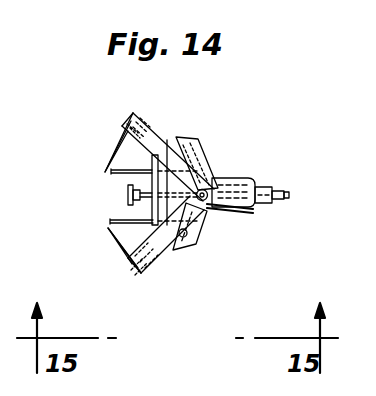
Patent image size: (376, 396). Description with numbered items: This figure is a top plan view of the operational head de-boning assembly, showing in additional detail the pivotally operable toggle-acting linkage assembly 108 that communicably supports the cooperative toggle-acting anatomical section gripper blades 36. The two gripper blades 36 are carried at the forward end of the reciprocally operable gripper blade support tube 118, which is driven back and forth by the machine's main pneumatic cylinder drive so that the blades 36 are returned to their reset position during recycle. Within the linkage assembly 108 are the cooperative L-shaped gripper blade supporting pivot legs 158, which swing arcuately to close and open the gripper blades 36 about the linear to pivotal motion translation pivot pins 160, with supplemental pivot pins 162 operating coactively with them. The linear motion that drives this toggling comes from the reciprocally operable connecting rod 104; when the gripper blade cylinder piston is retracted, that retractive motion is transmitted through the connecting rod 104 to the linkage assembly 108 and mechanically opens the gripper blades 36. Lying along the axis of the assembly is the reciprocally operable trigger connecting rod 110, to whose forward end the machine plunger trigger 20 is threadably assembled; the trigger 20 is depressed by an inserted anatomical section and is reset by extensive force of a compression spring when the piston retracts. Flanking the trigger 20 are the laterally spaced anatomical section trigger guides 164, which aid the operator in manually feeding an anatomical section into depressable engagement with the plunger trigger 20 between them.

The pivotally operable toggle-acting linkage assembly 108 is at (212, 104).
The cooperative toggle-acting anatomical section gripper blades 36 is at (117, 143).
The "L"-shaped gripper blade supporting pivot legs 158 is at (152, 135).
The laterally spaced anatomical section trigger guides 164 is at (113, 176).
The machine plunger trigger 20 is at (127, 194).
The linear to pivotal motion translation pivot pins 160 is at (207, 207).
The supplemental pivot pins 162 is at (200, 147).
The reciprocally operable gripper blade support tube 118 is at (235, 178).
The reciprocally operable connecting rod 104 is at (268, 186).
The reciprocally operable trigger connecting rod 110 is at (289, 193).